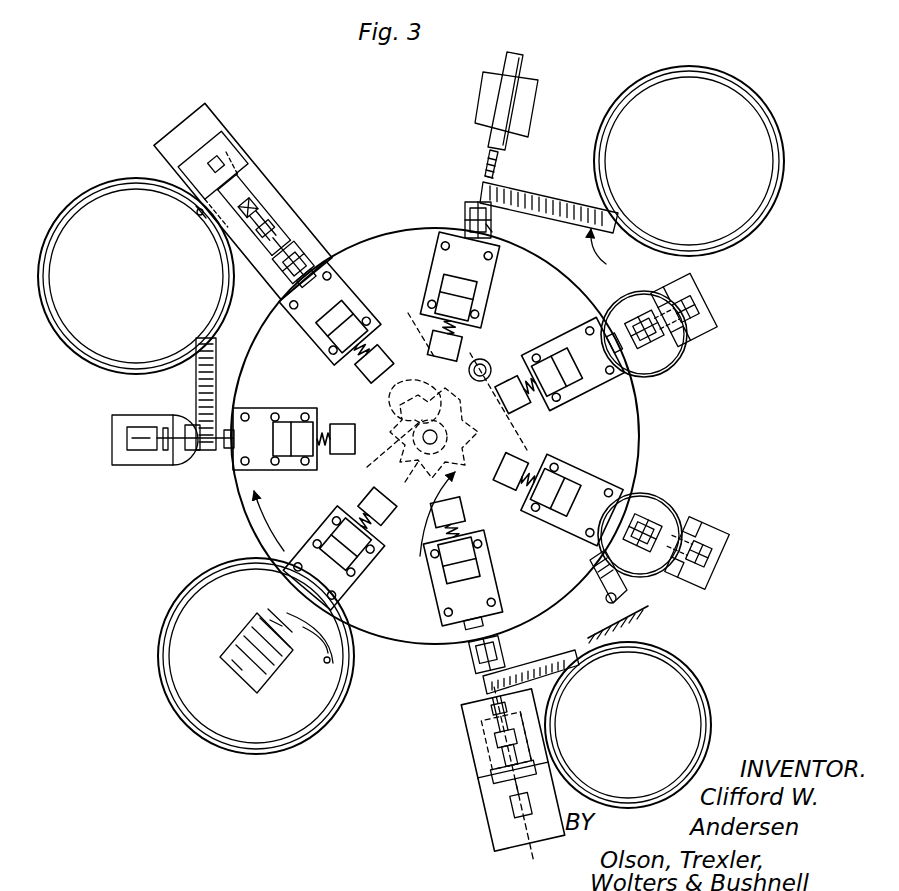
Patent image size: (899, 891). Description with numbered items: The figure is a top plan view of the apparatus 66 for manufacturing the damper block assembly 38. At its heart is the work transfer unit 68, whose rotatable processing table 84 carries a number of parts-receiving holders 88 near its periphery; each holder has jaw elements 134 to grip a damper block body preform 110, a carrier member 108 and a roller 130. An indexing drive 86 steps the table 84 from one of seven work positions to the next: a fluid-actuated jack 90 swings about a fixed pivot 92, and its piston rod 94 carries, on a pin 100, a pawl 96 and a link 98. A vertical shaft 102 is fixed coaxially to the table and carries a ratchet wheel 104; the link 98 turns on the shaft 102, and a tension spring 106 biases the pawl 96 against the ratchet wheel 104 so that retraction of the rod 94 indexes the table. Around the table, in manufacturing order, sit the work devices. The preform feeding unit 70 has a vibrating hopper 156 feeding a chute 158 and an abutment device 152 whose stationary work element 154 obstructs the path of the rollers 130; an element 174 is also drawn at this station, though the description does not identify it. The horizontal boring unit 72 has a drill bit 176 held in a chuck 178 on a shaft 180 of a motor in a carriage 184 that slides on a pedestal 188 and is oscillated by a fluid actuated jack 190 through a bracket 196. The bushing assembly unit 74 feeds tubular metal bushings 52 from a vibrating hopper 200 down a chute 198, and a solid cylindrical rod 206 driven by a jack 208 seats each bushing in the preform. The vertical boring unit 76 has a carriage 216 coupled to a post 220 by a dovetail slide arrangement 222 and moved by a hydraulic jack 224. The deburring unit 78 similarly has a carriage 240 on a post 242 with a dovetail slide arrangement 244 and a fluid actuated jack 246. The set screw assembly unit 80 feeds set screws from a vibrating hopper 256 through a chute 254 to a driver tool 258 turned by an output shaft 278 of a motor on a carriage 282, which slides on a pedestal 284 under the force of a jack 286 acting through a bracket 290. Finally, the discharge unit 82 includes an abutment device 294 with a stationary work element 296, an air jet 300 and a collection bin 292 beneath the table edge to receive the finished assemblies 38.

The damper block assembly 38 is at (302, 631).
The tubular metal bushing 52 is at (498, 192).
The apparatus 66 is at (712, 128).
The work transfer unit 68 is at (247, 531).
The preform feeding unit 70 is at (141, 444).
The horizontal boring unit 72 is at (241, 162).
The bushing assembly unit 74 is at (501, 148).
The vertical boring unit 76 is at (699, 288).
The deburring unit 78 is at (706, 508).
The set screw assembly unit 80 is at (478, 767).
The discharge unit 82 is at (245, 669).
The processing table 84 is at (374, 273).
The indexing drive 86 is at (428, 514).
The parts-receiving holders 88 is at (297, 398).
The fluid-actuated jack 90 is at (591, 591).
The fixed pivot 92 is at (576, 613).
The piston rod 94 is at (527, 427).
The pawl 96 is at (398, 393).
The link 98 is at (442, 433).
The pin 100 is at (488, 360).
The vertical shaft 102 is at (372, 455).
The ratchet wheel 104 is at (400, 481).
The tension spring 106 is at (408, 313).
The carrier member 108 is at (302, 264).
The damper block body preform 110 is at (284, 274).
The roller 130 is at (192, 452).
The jaw elements 134 is at (492, 228).
The abutment device 152 is at (138, 480).
The stationary work element 154 is at (185, 456).
The vibrating hopper 156 is at (83, 200).
The chute 158 is at (196, 386).
The motor rotor 174 is at (140, 440).
The drill bit 176 is at (296, 189).
The chuck 178 is at (248, 208).
The shaft 180 is at (201, 212).
The carriage 184 is at (200, 212).
The pedestal 188 is at (224, 179).
The fluid actuated jack 190 is at (232, 163).
The bracket 196 is at (216, 164).
The chute 198 is at (619, 254).
The vibrating hopper 200 is at (765, 95).
The solid cylindrical rod 206 is at (490, 162).
The fluid actuated jack 208 is at (520, 100).
The carriage 216 is at (664, 299).
The post 220 is at (684, 309).
The dovetail slide arrangement 222 is at (685, 309).
The hydraulic jack 224 is at (667, 318).
The carriage 240 is at (638, 494).
The post 242 is at (697, 553).
The dovetail slide arrangement 244 is at (699, 554).
The fluid actuated jack 246 is at (679, 545).
The chute 254 is at (562, 672).
The vibrating hopper 256 is at (670, 725).
The driver tool 258 is at (485, 686).
The output shaft 278 is at (511, 762).
The carriage 282 is at (519, 797).
The pedestal 284 is at (506, 741).
The fluid actuated jack 286 is at (502, 721).
The bracket 290 is at (488, 728).
The collection bin 292 is at (195, 736).
The abutment device 294 is at (237, 665).
The stationary work element 296 is at (277, 623).
The air jet 300 is at (330, 677).